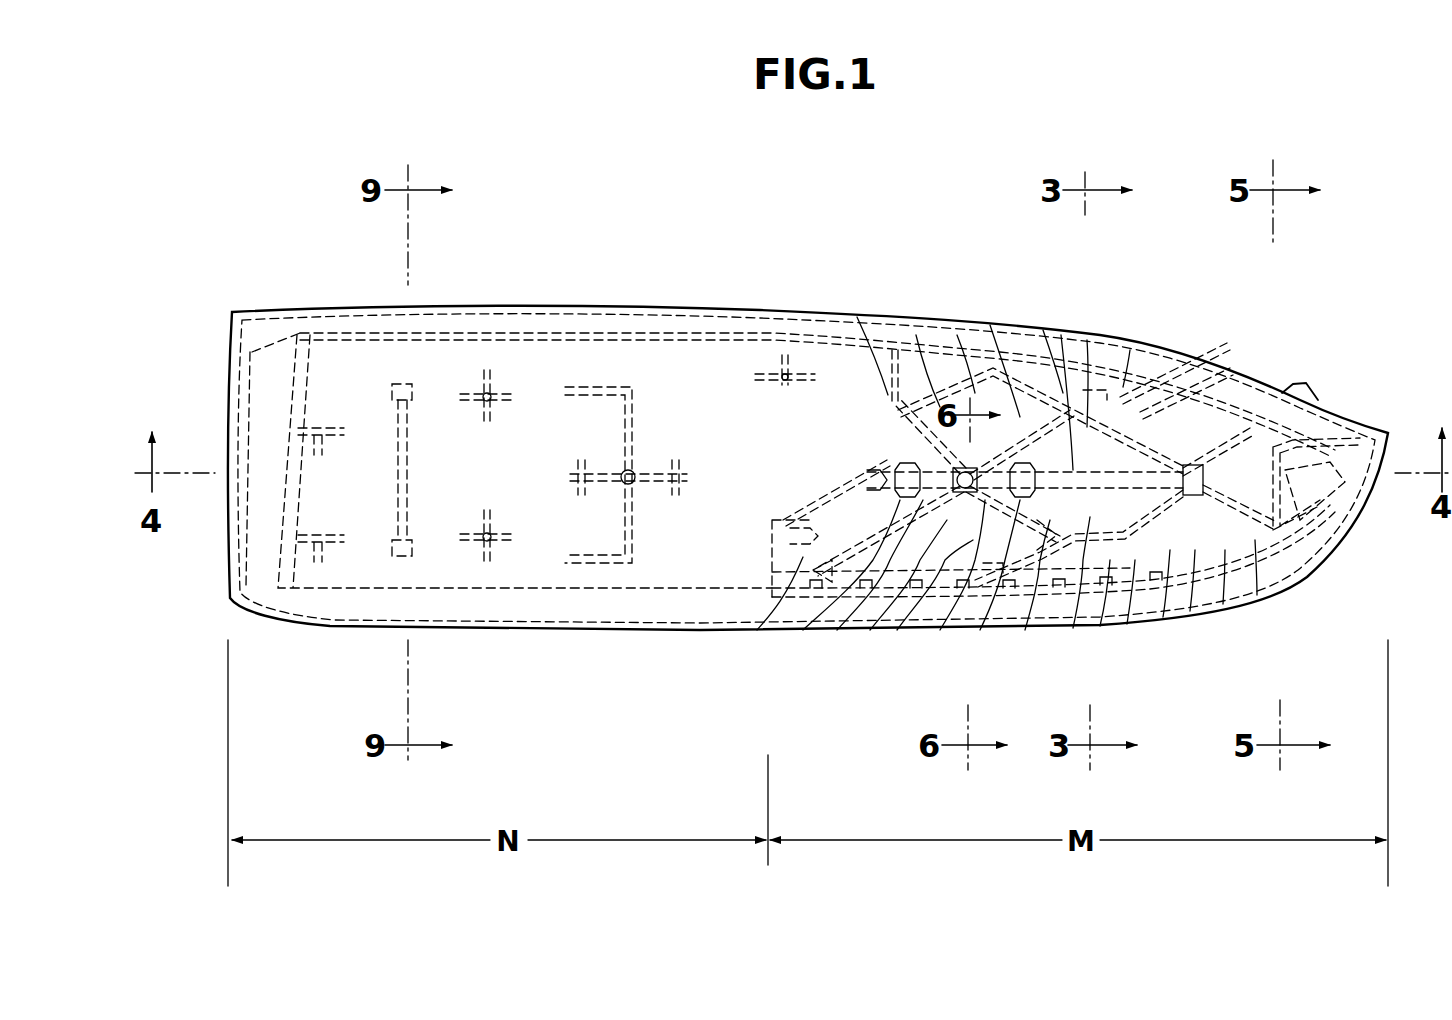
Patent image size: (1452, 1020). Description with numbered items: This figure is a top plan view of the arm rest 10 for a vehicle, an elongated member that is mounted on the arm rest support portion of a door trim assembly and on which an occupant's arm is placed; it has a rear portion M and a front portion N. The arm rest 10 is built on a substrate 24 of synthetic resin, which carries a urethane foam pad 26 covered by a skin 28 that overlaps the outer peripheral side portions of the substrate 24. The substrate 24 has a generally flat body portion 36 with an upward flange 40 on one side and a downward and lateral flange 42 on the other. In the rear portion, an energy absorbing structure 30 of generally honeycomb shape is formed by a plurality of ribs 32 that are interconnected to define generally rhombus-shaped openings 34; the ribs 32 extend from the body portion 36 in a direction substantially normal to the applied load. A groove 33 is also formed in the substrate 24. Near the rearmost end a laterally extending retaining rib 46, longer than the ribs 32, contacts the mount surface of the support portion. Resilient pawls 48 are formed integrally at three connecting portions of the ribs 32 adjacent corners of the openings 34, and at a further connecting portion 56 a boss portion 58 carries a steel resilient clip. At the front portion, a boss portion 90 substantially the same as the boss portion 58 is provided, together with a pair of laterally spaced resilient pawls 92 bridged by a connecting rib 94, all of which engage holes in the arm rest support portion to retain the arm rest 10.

The arm rest 10 is at (722, 214).
The substrate 24 is at (693, 345).
The pad 26 is at (617, 345).
The skin 28 is at (542, 345).
The energy absorbing structure 30 is at (1027, 302).
The ribs 32 is at (905, 335).
The groove 33 is at (857, 317).
The openings 34 is at (916, 335).
The body portion 36 is at (738, 340).
The upward flange 40 is at (1170, 385).
The downward and lateral flange 42 is at (757, 630).
The retaining rib 46 is at (1290, 505).
The resilient pawls 48 is at (1160, 355).
The connecting portion 56 is at (957, 474).
The boss portion 58 is at (805, 600).
The boss portion 90 is at (640, 465).
The resilient pawls 92 is at (395, 390).
The connecting rib 94 is at (412, 477).